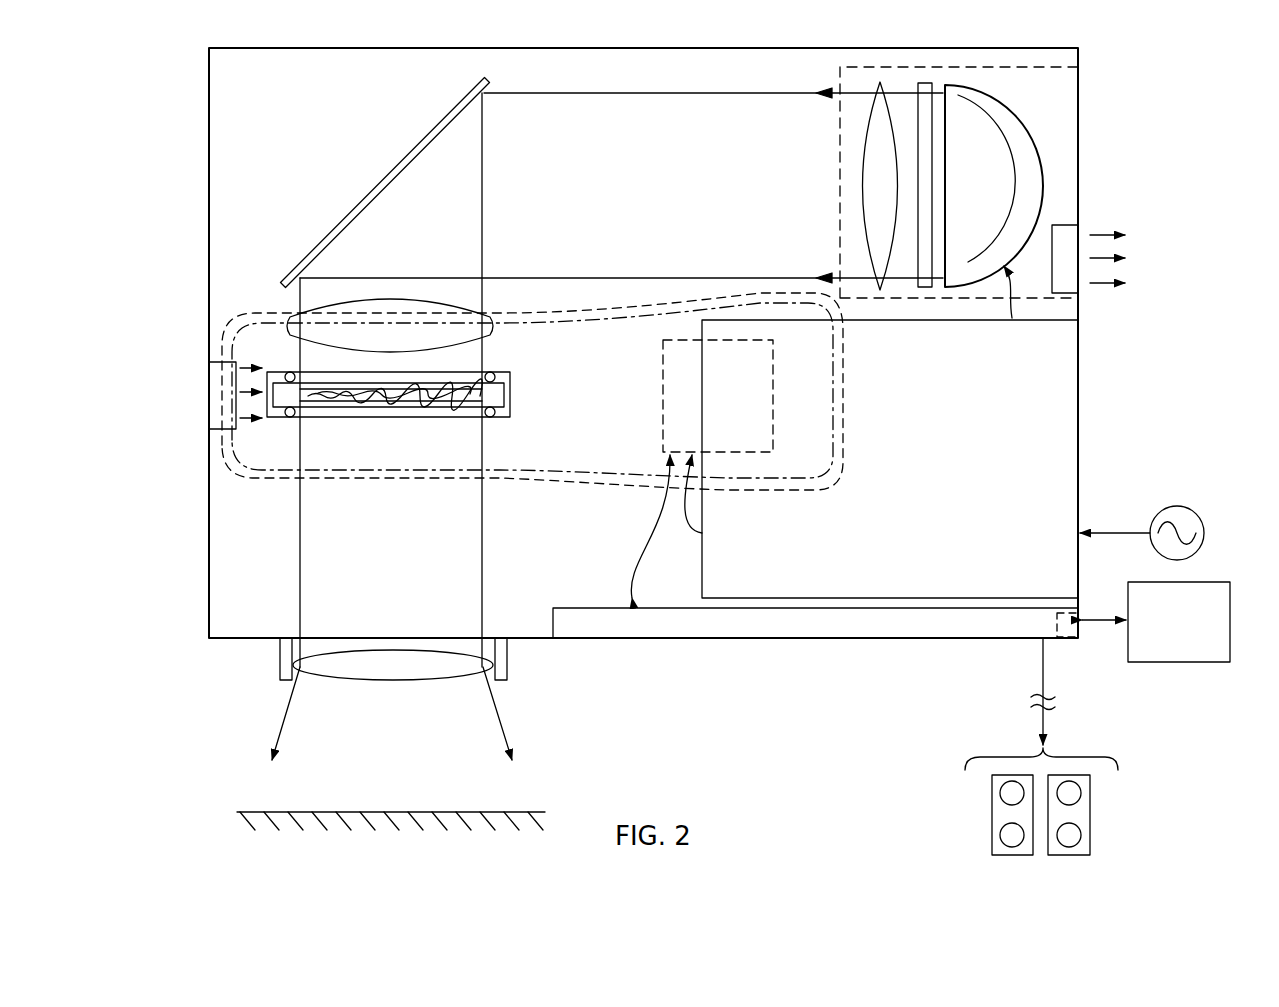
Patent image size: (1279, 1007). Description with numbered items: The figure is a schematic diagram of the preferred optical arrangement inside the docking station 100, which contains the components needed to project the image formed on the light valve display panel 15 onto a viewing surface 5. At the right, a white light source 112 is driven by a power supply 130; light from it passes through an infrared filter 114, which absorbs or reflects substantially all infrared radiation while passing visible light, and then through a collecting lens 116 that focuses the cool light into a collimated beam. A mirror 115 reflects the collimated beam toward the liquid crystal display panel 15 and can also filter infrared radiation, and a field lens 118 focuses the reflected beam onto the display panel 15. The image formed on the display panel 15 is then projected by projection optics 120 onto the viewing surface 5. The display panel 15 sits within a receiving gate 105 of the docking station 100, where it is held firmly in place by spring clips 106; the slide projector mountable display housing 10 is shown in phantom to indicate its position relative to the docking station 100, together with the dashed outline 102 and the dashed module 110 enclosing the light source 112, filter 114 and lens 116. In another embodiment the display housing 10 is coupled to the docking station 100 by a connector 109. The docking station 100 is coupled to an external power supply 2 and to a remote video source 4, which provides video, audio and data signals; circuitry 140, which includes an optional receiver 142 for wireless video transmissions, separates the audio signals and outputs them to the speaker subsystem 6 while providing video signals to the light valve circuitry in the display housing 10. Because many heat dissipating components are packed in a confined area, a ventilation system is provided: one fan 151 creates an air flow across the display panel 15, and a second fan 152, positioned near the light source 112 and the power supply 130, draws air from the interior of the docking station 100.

The docking station 100 is at (1096, 85).
The external power supply 2 is at (1193, 511).
The remote video source 4 is at (1188, 653).
The viewing surface 5 is at (540, 812).
The remote speakers 6 is at (982, 818).
The display housing 10 is at (238, 463).
The light valve display panel 15 is at (455, 390).
The light path envelope 102 is at (226, 313).
The receiving gate 105 is at (512, 412).
The spring clips 106 is at (490, 418).
The connector 109 is at (663, 368).
The optical module 110 is at (840, 67).
The white light source 112 is at (1008, 199).
The infrared filter 114 is at (925, 83).
The mirror 115 is at (360, 206).
The collecting lens 116 is at (870, 189).
The field lens 118 is at (292, 318).
The projection optics 120 is at (377, 704).
The power supply 130 is at (940, 521).
The circuitry 140 is at (668, 628).
The receiver 142 is at (1072, 638).
The fan 151 is at (212, 415).
The second fan 152 is at (1067, 236).